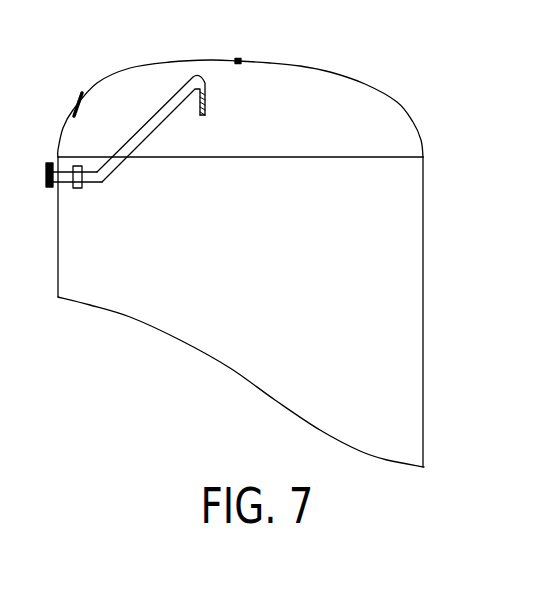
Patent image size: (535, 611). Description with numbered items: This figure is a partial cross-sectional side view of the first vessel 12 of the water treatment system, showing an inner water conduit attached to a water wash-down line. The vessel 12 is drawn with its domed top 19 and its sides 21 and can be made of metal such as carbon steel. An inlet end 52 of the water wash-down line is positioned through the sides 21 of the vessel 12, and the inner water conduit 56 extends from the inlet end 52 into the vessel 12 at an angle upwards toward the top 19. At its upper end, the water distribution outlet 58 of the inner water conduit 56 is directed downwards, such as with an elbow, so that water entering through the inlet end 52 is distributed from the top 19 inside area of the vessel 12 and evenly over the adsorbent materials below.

The first vessel 12 is at (258, 238).
The top 19 is at (318, 65).
The sides 21 is at (425, 220).
The inlet end 52 is at (55, 174).
The inner water conduit 56 is at (142, 138).
The water distribution outlet 58 is at (207, 105).